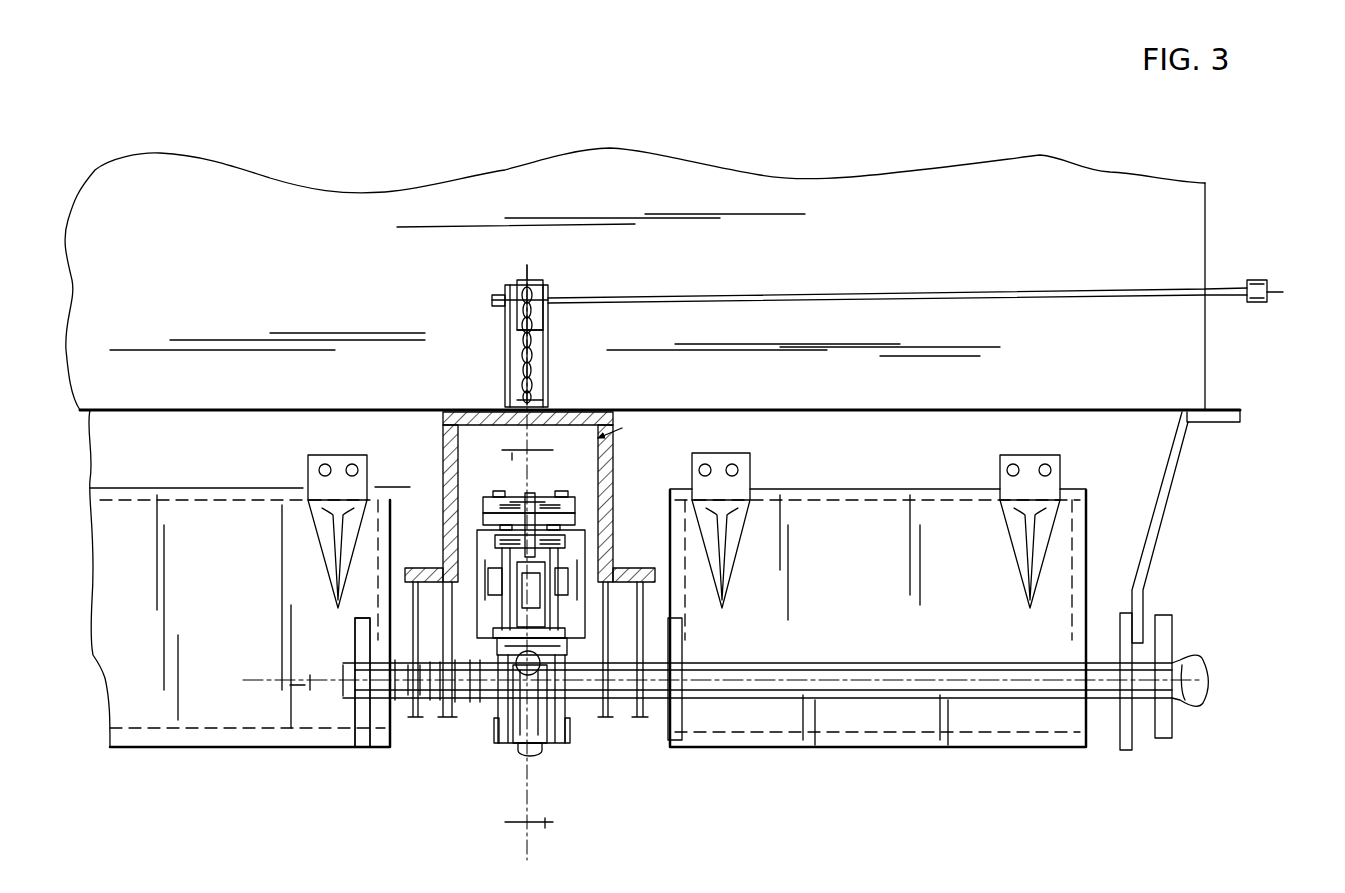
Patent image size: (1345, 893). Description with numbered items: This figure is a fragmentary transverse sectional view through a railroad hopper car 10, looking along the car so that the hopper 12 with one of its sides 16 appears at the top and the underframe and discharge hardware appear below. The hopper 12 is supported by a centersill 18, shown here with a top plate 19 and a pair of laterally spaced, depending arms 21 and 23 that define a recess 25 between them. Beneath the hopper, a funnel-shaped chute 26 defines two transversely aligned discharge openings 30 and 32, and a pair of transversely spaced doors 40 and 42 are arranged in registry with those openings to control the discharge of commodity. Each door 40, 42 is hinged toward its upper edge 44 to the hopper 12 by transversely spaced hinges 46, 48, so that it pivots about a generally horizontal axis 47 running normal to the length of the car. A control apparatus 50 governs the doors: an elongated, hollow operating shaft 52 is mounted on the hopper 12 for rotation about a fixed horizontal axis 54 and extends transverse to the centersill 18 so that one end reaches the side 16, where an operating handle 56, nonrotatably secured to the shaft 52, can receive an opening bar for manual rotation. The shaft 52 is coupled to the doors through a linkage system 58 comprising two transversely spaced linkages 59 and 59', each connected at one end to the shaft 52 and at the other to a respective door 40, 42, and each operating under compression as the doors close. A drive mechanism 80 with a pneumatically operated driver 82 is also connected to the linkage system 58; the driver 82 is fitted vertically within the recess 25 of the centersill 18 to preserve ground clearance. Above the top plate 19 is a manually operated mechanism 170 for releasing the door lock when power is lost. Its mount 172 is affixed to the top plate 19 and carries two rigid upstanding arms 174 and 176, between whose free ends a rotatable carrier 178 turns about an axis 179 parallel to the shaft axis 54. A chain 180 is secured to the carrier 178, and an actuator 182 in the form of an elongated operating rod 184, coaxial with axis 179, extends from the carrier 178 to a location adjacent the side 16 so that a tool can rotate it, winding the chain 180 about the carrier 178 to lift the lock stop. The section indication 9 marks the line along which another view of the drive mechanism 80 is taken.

The section line 9- 9 is at (520, 562).
The railroad hopper car 10 is at (985, 90).
The hopper 12 is at (1252, 196).
The side 16 is at (1210, 186).
The centersill 18 is at (531, 480).
The top plate 19 is at (590, 412).
The arm 21 is at (452, 448).
The arm 23 is at (614, 450).
The recess 25 is at (622, 428).
The funnel-shaped chute 26 is at (225, 450).
The opening 30 is at (122, 735).
The opening 32 is at (1040, 720).
The door 40 is at (614, 610).
The door 42 is at (886, 612).
The upper edge 44 is at (138, 487).
The hinge 46 is at (748, 460).
The horizontal axis 47 is at (405, 492).
The hinge 48 is at (310, 453).
The control apparatus 50 is at (860, 703).
The operating shaft 52 is at (843, 668).
The axis 54 is at (745, 682).
The operating handle 56 is at (1220, 662).
The linkage system 58 is at (375, 762).
The linkage 59 is at (337, 681).
The linkage 59' is at (716, 676).
The drive mechanism 80 is at (545, 623).
The driver 82 is at (583, 540).
The manually operated mechanism 170 is at (511, 331).
The mount 172 is at (500, 390).
The arm 174 is at (505, 350).
The arm 176 is at (545, 350).
The rotatable carrier 178 is at (530, 285).
The axis 179 is at (878, 289).
The chain 180 is at (540, 337).
The actuator 182 is at (1318, 246).
The operating rod 184 is at (1086, 287).